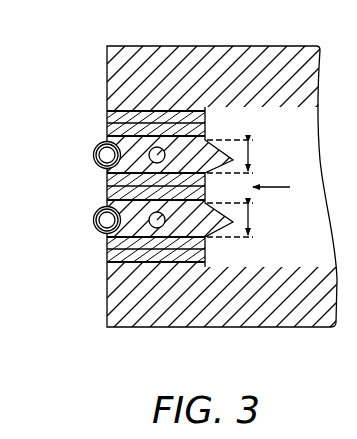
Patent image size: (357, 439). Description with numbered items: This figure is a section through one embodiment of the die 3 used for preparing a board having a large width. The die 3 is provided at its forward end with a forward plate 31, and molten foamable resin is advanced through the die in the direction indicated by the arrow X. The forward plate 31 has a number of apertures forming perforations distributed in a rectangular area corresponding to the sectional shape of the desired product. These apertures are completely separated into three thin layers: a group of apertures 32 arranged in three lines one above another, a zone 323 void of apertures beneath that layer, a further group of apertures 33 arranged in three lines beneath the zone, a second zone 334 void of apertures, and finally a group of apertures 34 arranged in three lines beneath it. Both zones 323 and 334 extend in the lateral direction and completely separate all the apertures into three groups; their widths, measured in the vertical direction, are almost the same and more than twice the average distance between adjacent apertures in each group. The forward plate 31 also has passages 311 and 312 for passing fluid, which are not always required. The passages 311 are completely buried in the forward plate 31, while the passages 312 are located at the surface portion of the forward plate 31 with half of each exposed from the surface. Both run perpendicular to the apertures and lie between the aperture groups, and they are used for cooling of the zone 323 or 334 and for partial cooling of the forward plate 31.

The die 3 is at (189, 170).
The forward plate 31 is at (105, 75).
The passages 311 is at (107, 264).
The apertures 32 is at (107, 119).
The zone 323 is at (107, 137).
The passages 312 is at (96, 156).
The apertures 33 is at (107, 190).
The zone 334 is at (104, 206).
The apertures 34 is at (207, 242).